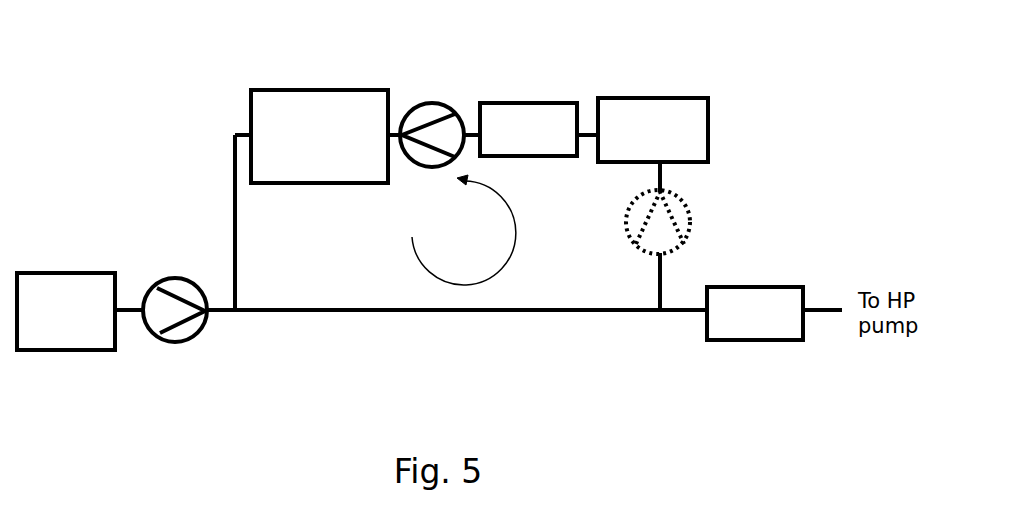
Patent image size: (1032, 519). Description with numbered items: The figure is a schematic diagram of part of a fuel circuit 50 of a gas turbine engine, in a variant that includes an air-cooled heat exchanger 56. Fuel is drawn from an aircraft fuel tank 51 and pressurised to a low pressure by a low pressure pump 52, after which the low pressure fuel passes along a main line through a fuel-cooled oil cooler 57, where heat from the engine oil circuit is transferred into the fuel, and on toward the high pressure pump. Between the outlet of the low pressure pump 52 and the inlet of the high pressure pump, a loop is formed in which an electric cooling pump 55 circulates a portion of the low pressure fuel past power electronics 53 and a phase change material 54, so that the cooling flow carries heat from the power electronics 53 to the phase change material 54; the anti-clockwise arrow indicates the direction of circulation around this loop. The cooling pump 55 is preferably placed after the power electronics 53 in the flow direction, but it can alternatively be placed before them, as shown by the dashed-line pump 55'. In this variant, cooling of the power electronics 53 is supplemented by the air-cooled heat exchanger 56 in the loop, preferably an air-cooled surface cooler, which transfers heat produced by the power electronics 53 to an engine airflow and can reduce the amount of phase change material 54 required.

The fuel circuit 50 is at (207, 220).
The aircraft fuel tank 51 is at (65, 272).
The low pressure (LP) pump 52 is at (173, 344).
The power electronics (PE) 53 is at (650, 97).
The phase change material (PCM) 54 is at (522, 101).
The electric cooling pump 55 is at (433, 109).
The dashed-line pump 55' is at (692, 222).
The air-cooled heat exchanger 56 is at (318, 88).
The fuel-cooled oil cooler (FCOC) 57 is at (750, 287).